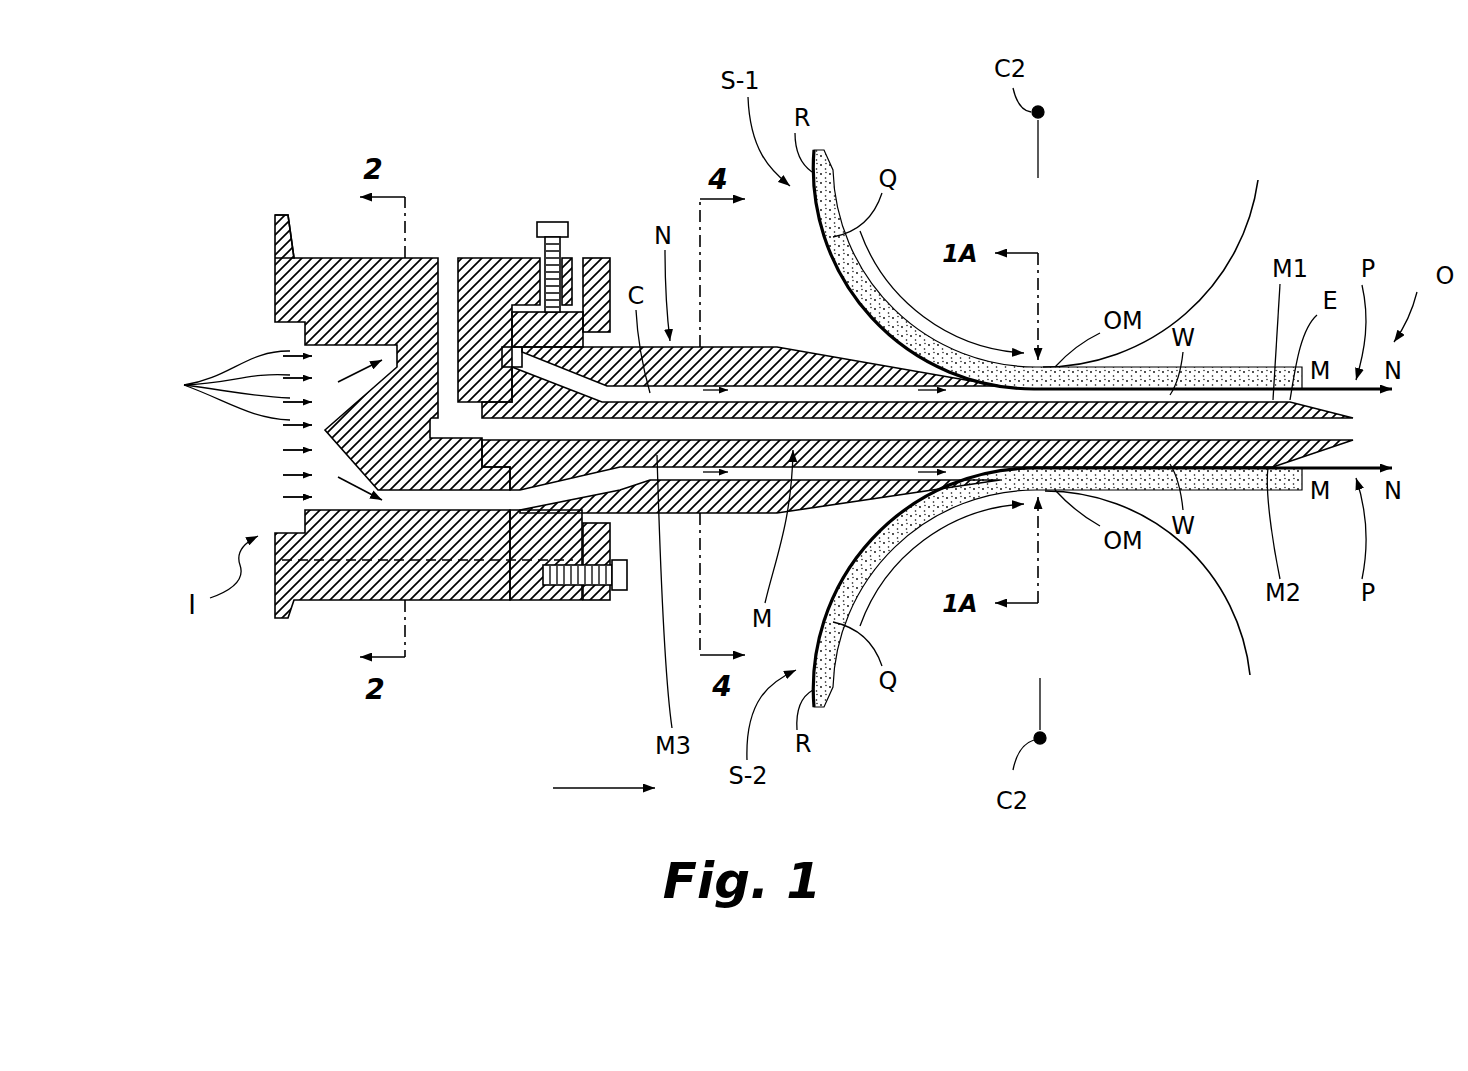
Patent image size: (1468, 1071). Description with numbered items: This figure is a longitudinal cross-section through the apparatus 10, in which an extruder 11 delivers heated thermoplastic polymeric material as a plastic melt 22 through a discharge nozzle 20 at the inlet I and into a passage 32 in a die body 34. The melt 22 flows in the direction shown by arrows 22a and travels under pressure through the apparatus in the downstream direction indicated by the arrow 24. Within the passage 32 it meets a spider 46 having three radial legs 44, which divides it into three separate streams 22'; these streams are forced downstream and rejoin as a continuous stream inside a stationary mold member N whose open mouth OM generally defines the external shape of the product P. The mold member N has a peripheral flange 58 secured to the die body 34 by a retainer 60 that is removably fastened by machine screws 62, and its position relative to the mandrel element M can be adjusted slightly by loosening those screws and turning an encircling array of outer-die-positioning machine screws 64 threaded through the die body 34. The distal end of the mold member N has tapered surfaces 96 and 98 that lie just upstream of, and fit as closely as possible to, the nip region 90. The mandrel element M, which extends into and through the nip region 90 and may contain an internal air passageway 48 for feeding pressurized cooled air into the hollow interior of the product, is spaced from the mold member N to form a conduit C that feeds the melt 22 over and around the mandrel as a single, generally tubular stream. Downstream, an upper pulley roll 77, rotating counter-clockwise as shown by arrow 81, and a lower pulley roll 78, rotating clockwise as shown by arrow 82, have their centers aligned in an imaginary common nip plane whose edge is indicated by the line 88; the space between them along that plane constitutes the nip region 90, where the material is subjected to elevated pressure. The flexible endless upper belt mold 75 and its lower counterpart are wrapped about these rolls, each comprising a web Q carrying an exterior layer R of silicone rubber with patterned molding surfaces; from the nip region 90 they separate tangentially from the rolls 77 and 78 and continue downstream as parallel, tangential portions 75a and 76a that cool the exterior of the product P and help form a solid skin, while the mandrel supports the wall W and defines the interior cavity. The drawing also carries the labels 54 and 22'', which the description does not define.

The apparatus 10 is at (216, 192).
The extruder 11 is at (318, 248).
The discharge nozzle 20 is at (170, 451).
The plastic melt 22 is at (227, 424).
The arrows 22a is at (302, 317).
The separate streams 22' is at (824, 313).
The lower air stream 22'' is at (824, 516).
The arrow 24 is at (593, 790).
The passage 32 is at (457, 601).
The die body 34 is at (420, 345).
The radial legs 44 is at (385, 362).
The spider 46 is at (322, 456).
The internal air passageway 48 is at (452, 257).
The upper nozzle member 54 is at (767, 387).
The peripheral flange 58 is at (530, 311).
The retainer 60 is at (598, 257).
The machine screws 62 is at (630, 591).
The outer-die-positioning machine screws 64 is at (553, 221).
The belt mold 75 is at (863, 278).
The parallel tangential portion 75a is at (1230, 395).
The parallel tangential portion 76a is at (1230, 464).
The upper pulley roll 77 is at (1024, 222).
The lower pulley roll 78 is at (1024, 655).
The arrow 81 is at (948, 283).
The arrow 82 is at (948, 575).
The line 88 is at (1046, 150).
The nip region 90 is at (1044, 363).
The tapered surface 96 is at (867, 357).
The tapered surface 98 is at (867, 500).